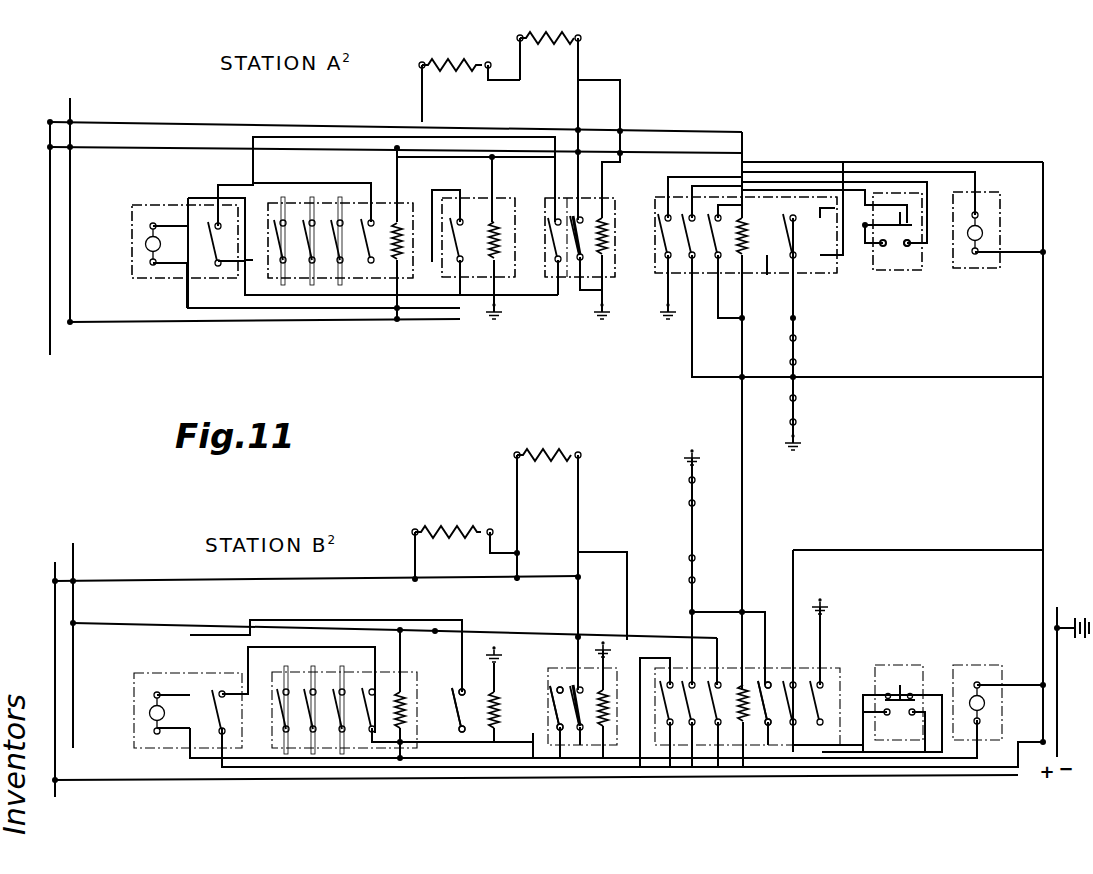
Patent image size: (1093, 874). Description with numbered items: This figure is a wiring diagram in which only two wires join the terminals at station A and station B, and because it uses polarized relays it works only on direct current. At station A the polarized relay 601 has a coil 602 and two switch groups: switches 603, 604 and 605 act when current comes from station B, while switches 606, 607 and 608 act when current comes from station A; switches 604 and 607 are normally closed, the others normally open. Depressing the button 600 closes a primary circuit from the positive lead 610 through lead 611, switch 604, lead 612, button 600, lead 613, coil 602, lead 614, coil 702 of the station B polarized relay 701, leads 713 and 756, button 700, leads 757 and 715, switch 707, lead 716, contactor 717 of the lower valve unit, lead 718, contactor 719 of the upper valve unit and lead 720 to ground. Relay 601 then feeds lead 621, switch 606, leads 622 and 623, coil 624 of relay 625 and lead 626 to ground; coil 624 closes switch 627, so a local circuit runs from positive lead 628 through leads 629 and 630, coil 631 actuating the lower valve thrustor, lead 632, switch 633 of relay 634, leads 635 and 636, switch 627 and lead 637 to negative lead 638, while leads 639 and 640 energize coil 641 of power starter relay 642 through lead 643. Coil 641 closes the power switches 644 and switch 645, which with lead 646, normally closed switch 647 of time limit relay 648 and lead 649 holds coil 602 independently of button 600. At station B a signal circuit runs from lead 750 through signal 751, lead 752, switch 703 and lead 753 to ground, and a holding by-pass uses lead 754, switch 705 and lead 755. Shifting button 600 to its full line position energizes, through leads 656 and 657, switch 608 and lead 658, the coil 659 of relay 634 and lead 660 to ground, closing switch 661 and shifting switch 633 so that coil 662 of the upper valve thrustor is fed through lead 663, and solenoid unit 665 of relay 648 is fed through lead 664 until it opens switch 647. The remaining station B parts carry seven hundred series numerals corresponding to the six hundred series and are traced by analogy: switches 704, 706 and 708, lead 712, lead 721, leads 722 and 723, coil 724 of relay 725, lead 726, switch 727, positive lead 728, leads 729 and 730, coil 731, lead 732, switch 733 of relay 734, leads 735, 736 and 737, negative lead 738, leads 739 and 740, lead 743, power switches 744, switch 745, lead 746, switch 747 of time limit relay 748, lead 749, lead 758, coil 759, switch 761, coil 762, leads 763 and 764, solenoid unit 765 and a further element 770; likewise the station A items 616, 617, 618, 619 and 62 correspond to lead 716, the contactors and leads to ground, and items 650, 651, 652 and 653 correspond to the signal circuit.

The button 600 is at (924, 247).
The polarized relay 601 is at (797, 273).
The coil 602 is at (746, 245).
The switch 603 is at (604, 256).
The switch 604 is at (605, 320).
The switch 605 is at (693, 295).
The switch 606 is at (742, 218).
The switch 607 is at (803, 172).
The switch 608 is at (818, 182).
The positive lead 610 is at (1043, 571).
The lead 611 is at (1043, 378).
The lead 612 is at (718, 218).
The lead 613 is at (845, 190).
The lead 614 is at (744, 474).
The conductor 616 is at (796, 318).
The contact 617 is at (797, 340).
The contact 618 is at (797, 398).
The contact 619 is at (797, 420).
The ground connection 62 is at (800, 443).
The lead 621 is at (990, 162).
The lead 622 is at (805, 162).
The lead 623 is at (496, 155).
The coil 624 is at (502, 314).
The relay 625 is at (512, 198).
The lead 626 is at (494, 261).
The normally open switch 627 is at (457, 295).
The positive lead 628 is at (50, 199).
The lead 629 is at (222, 122).
The lead 630 is at (422, 98).
The coil 631 is at (428, 60).
The lead 632 is at (606, 80).
The switch 633 is at (558, 296).
The relay 634 is at (564, 198).
The lead 635 is at (558, 260).
The lead 636 is at (436, 190).
The lead 637 is at (160, 322).
The negative lead 638 is at (73, 338).
The lead 639 is at (92, 148).
The lead 640 is at (371, 137).
The coil 641 is at (371, 260).
The power starter relay 642 is at (312, 260).
The lead 643 is at (397, 260).
The power switches 644 is at (283, 260).
The switch 645 is at (340, 260).
The lead 646 is at (300, 190).
The normally closed switch 647 is at (203, 270).
The time limit relay 648 is at (123, 209).
The lead 649 is at (252, 172).
The lamp 650 is at (985, 252).
The lamp unit 651 is at (970, 245).
The switch contact 652 is at (668, 215).
The ground connection 653 is at (660, 318).
The lead 656 is at (900, 253).
The lead 657 is at (890, 212).
The lead 658 is at (692, 180).
The coil 659 is at (668, 177).
The lead 660 is at (582, 257).
The switch 661 is at (550, 208).
The coil 662 is at (516, 38).
The lead 663 is at (582, 38).
The lead 664 is at (459, 262).
The solenoid unit 665 is at (145, 247).
The button 700 is at (900, 683).
The polarized relay 701 is at (824, 618).
The coil 702 is at (705, 678).
The switch 703 is at (827, 683).
The switch contact 704 is at (750, 674).
The switch 705 is at (793, 728).
The relay 706 is at (718, 748).
The switch 707 is at (692, 725).
The switch contact 708 is at (668, 725).
The conductor 712 is at (880, 753).
The lead 713 is at (768, 726).
The lead 715 is at (915, 765).
The lead 716 is at (694, 612).
The contactor 717 is at (689, 570).
The lead 718 is at (690, 521).
The contactor 719 is at (689, 491).
The lead 720 is at (687, 463).
The conductor 721 is at (865, 745).
The conductor 722 is at (575, 630).
The relay coil 723 is at (492, 728).
The switch contact 724 is at (464, 734).
The switch contact 725 is at (462, 688).
The ground connection 726 is at (495, 652).
The switch contact 727 is at (372, 732).
The bus conductor 728 is at (55, 620).
The bus conductor 729 is at (122, 581).
The conductor 730 is at (415, 563).
The resistor 731 is at (450, 529).
The conductor 732 is at (530, 550).
The switch contact 733 is at (564, 728).
The switch contact 734 is at (582, 728).
The conductor 735 is at (578, 578).
The conductor 736 is at (404, 642).
The bus conductor 737 is at (175, 623).
The conductor 738 is at (75, 665).
The bus conductor 739 is at (100, 780).
The switch contact 740 is at (342, 725).
The conductor 743 is at (378, 620).
The switch contact 744 is at (287, 722).
The switch contact 745 is at (315, 724).
The relay 746 is at (270, 647).
The switch contact 747 is at (192, 744).
The lamp 748 is at (135, 722).
The relay coil 749 is at (400, 730).
The lead 750 is at (993, 685).
The signal 751 is at (980, 721).
The lead 752 is at (958, 760).
The lead 753 is at (830, 603).
The lead 754 is at (742, 725).
The lead 755 is at (705, 610).
The lead 756 is at (890, 665).
The lead 757 is at (925, 695).
The conductor 758 is at (640, 658).
The conductor 759 is at (620, 652).
The switch contact 761 is at (559, 728).
The resistor 762 is at (517, 455).
The conductor 763 is at (580, 499).
The conductor 764 is at (540, 765).
The conductor 765 is at (153, 695).
The relay coil 770 is at (605, 647).